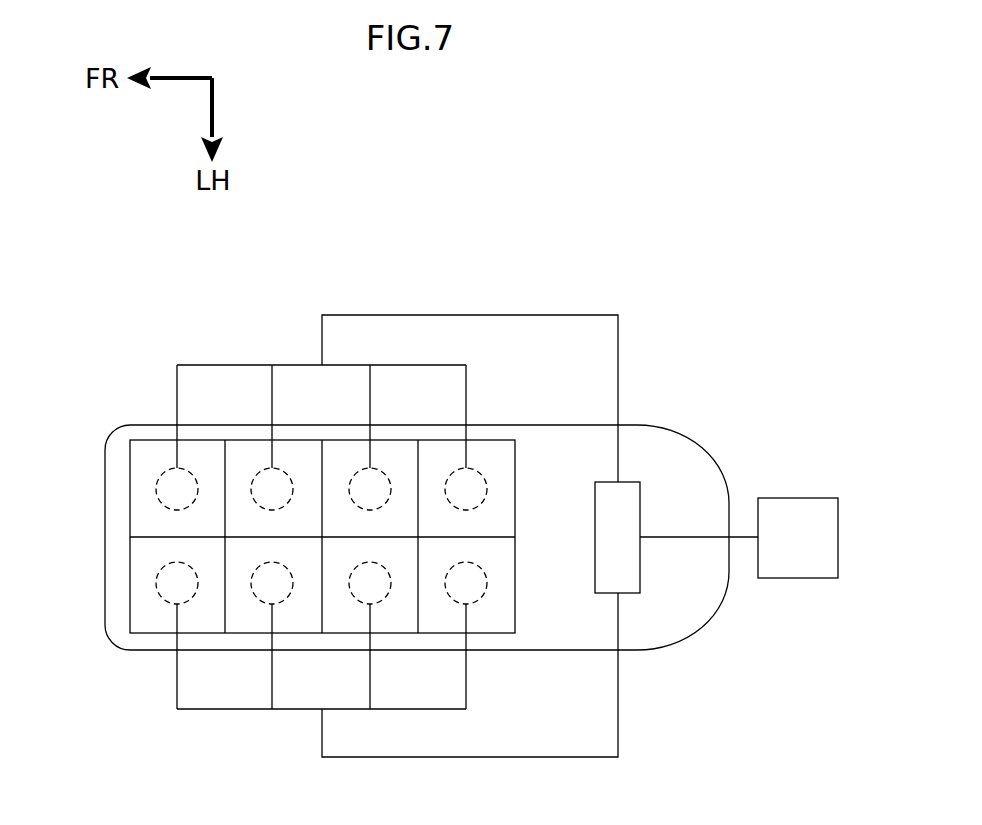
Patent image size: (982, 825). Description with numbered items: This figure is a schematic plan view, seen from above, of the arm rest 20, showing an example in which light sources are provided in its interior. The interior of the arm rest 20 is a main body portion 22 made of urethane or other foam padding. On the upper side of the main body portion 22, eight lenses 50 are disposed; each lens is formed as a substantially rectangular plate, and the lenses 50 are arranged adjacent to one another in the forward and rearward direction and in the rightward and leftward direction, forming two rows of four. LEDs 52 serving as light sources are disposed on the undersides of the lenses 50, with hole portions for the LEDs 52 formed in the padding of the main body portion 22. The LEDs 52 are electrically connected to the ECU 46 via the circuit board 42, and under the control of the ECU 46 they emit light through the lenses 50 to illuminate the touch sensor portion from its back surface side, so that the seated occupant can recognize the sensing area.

The arm rest 20 is at (662, 408).
The main body portion 22 is at (555, 637).
The circuit board 42 is at (644, 507).
The ECU 46 is at (800, 498).
The lens 50 is at (293, 448).
The LED 52 is at (162, 477).